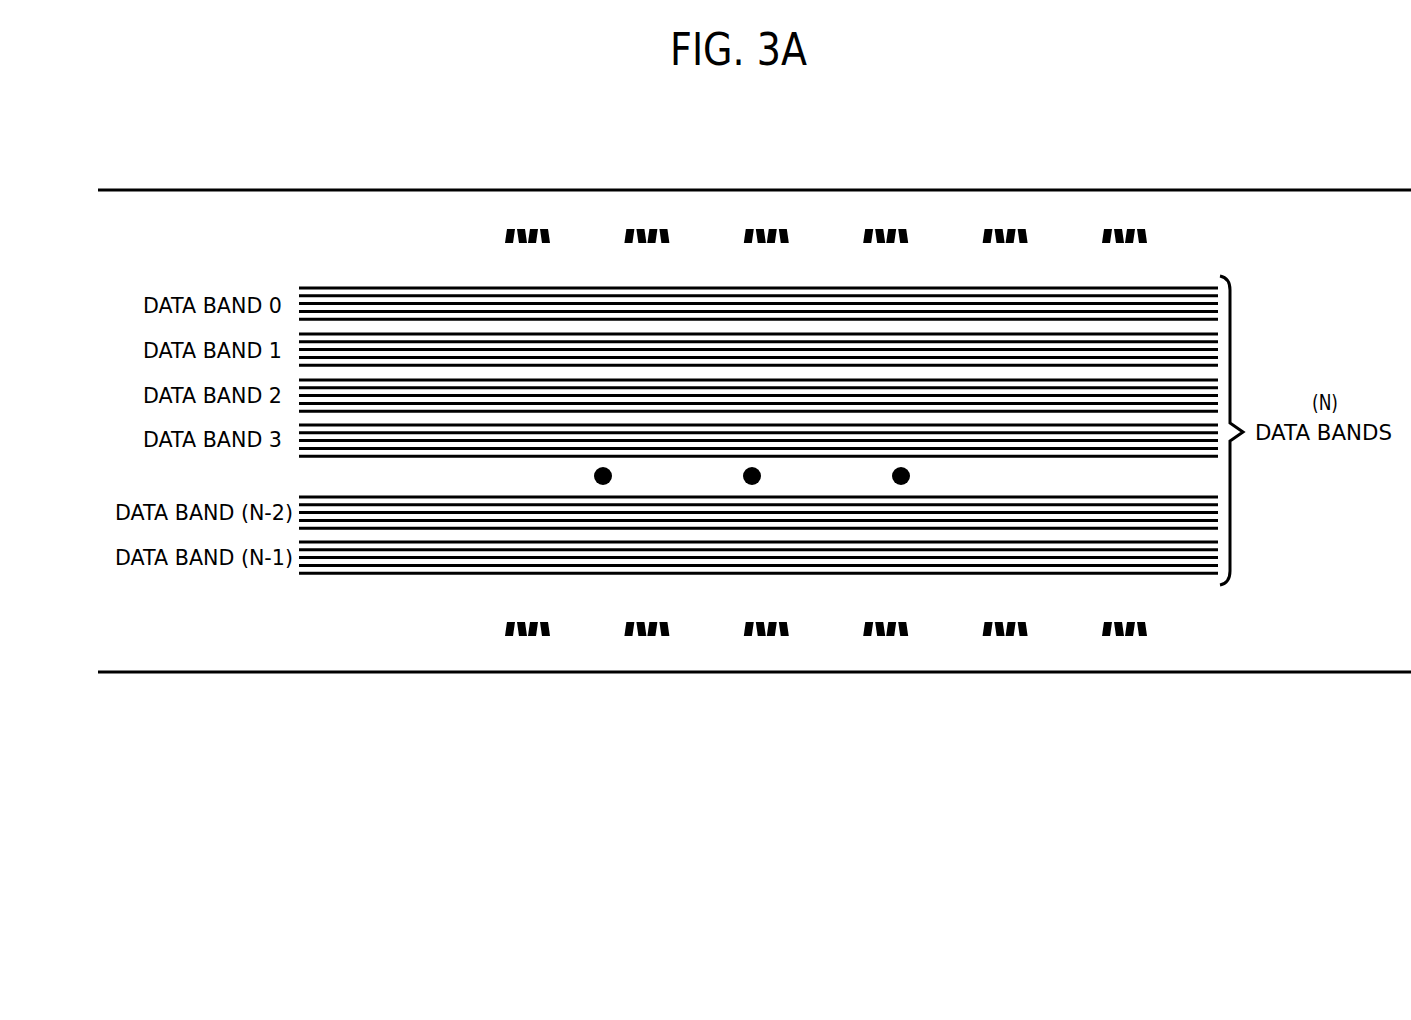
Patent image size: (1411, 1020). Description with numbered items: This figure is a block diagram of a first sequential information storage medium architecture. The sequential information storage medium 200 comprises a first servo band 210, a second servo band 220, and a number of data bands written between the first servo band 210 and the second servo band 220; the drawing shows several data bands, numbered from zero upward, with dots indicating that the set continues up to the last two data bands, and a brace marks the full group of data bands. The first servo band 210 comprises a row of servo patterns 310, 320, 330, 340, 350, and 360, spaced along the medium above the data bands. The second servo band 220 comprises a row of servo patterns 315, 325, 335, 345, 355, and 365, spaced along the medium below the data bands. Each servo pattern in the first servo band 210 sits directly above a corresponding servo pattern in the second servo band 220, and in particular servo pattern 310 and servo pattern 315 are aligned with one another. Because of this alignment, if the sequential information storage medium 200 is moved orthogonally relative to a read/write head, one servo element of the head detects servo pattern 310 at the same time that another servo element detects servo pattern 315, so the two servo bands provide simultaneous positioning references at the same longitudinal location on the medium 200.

The sequential information storage medium 200 is at (708, 822).
The first servo band 210 is at (728, 197).
The second servo band 220 is at (689, 663).
The servo pattern 310 is at (518, 223).
The servo pattern 320 is at (637, 223).
The servo pattern 330 is at (757, 223).
The servo pattern 340 is at (876, 223).
The servo pattern 350 is at (996, 223).
The servo pattern 360 is at (1115, 223).
The servo pattern 315 is at (518, 638).
The servo pattern 325 is at (637, 638).
The servo pattern 335 is at (757, 638).
The servo pattern 345 is at (876, 638).
The servo pattern 355 is at (996, 638).
The servo pattern 365 is at (1115, 638).